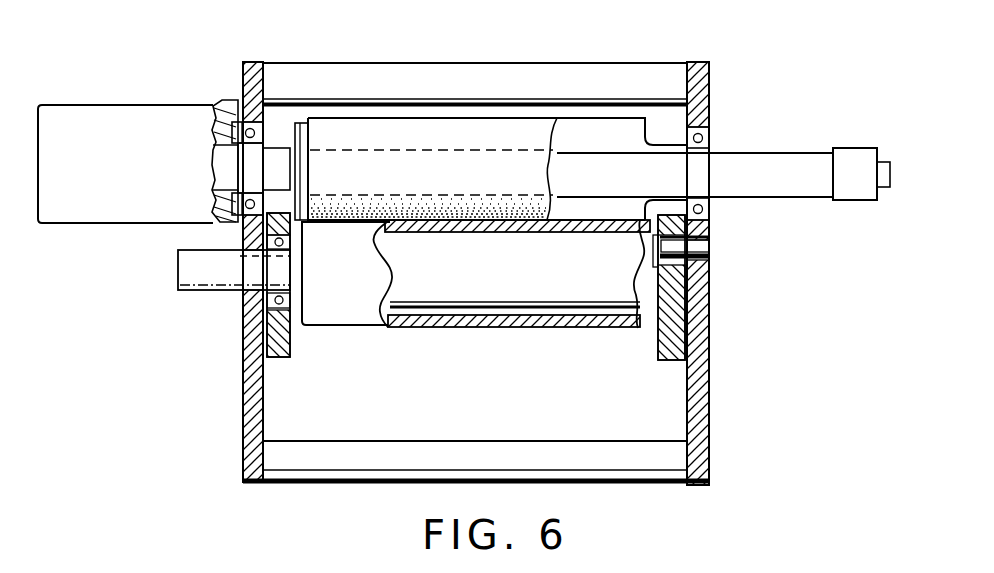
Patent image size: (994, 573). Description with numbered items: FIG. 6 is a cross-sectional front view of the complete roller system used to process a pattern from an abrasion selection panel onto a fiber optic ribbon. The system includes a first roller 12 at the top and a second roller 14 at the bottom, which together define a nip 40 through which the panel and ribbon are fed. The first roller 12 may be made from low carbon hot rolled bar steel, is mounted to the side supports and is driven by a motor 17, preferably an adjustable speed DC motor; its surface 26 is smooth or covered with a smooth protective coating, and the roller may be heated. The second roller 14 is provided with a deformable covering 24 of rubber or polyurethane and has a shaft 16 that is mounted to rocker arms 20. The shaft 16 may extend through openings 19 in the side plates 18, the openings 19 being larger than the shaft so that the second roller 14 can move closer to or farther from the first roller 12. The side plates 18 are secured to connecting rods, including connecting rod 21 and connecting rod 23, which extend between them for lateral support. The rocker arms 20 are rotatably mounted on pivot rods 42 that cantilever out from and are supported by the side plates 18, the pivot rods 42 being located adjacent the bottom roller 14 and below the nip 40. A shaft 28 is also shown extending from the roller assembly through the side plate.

The first roller 12 is at (497, 120).
The second roller 14 is at (578, 300).
The shaft 16 is at (185, 268).
The motor 17 is at (117, 117).
The side plates 18 is at (243, 72).
The openings 19 is at (252, 298).
The rocker arms 20 is at (284, 356).
The connecting rod 21 is at (355, 452).
The connecting rod 23 is at (320, 70).
The deformable covering 24 is at (443, 322).
The surface 26 is at (338, 223).
The shaft 28 is at (762, 160).
The nip 40 is at (497, 228).
The pivot rods 42 is at (248, 262).